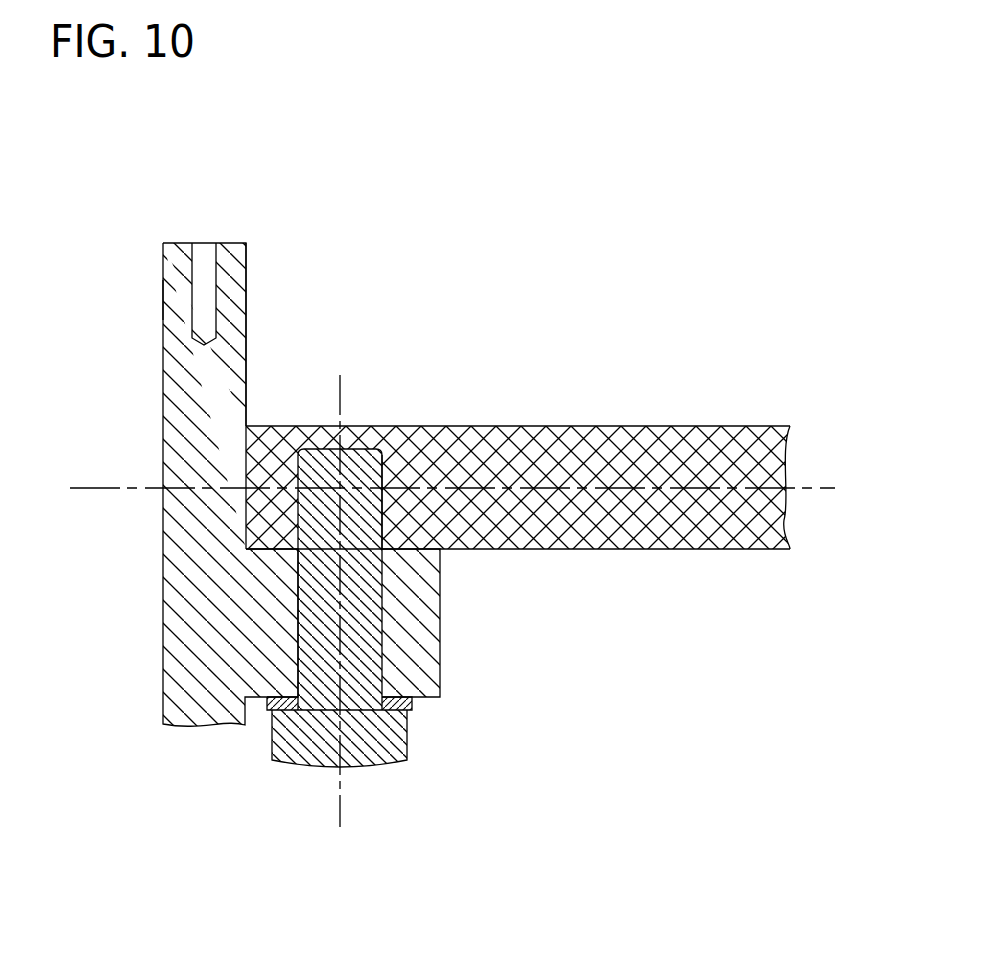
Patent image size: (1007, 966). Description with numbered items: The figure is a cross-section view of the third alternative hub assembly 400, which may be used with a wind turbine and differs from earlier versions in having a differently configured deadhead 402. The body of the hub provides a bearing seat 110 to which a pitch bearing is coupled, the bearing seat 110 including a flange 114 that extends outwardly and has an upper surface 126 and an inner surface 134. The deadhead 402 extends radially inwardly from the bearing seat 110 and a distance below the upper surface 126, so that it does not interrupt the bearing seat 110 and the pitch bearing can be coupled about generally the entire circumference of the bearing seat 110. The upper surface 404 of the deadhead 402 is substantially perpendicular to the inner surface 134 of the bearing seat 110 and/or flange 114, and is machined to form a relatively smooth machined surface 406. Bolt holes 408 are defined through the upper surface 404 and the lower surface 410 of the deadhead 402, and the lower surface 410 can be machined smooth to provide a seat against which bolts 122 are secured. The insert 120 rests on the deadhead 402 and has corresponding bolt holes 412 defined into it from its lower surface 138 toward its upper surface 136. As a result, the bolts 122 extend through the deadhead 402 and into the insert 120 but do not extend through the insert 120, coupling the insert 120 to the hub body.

The bearing seat 110 is at (168, 296).
The flange 114 is at (196, 458).
The insert 120 is at (518, 457).
The bolts 122 is at (376, 753).
The upper surface of bearing seat 126 is at (225, 243).
The inner surface of bearing seat 134 is at (246, 307).
The upper surface of insert 136 is at (582, 427).
The lower surface of insert 138 is at (700, 549).
The hub assembly 400 is at (535, 485).
The deadhead 402 is at (422, 664).
The upper surface of deadhead 404 is at (438, 549).
The machined surface 406 is at (270, 547).
The bolt holes 408 is at (406, 539).
The lower surface of deadhead 410 is at (430, 699).
The bolt holes of insert 412 is at (368, 503).